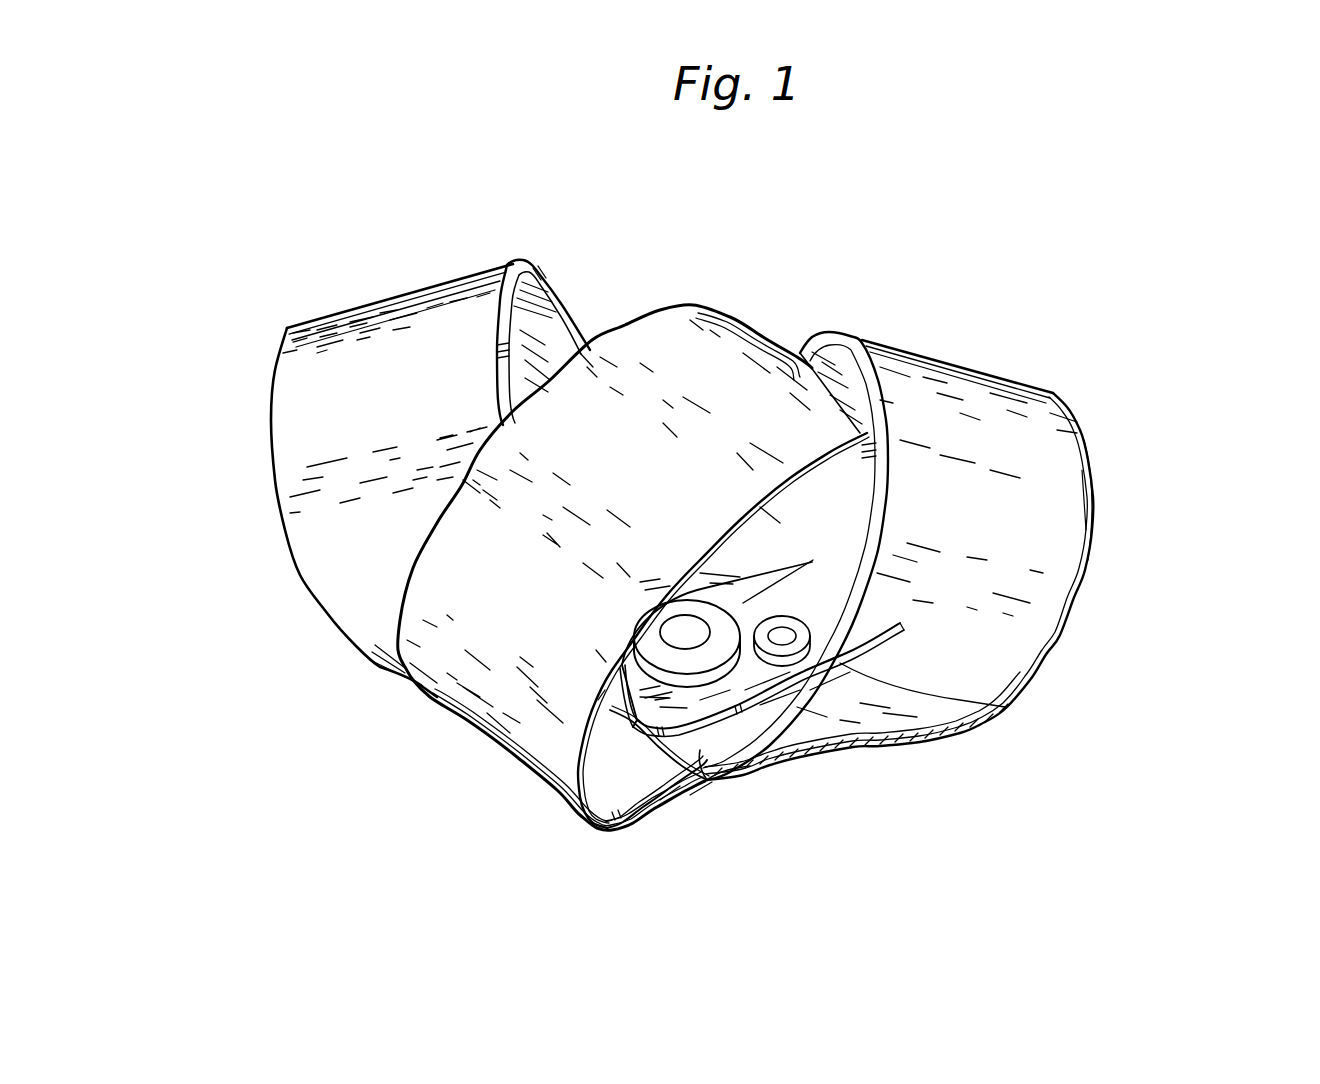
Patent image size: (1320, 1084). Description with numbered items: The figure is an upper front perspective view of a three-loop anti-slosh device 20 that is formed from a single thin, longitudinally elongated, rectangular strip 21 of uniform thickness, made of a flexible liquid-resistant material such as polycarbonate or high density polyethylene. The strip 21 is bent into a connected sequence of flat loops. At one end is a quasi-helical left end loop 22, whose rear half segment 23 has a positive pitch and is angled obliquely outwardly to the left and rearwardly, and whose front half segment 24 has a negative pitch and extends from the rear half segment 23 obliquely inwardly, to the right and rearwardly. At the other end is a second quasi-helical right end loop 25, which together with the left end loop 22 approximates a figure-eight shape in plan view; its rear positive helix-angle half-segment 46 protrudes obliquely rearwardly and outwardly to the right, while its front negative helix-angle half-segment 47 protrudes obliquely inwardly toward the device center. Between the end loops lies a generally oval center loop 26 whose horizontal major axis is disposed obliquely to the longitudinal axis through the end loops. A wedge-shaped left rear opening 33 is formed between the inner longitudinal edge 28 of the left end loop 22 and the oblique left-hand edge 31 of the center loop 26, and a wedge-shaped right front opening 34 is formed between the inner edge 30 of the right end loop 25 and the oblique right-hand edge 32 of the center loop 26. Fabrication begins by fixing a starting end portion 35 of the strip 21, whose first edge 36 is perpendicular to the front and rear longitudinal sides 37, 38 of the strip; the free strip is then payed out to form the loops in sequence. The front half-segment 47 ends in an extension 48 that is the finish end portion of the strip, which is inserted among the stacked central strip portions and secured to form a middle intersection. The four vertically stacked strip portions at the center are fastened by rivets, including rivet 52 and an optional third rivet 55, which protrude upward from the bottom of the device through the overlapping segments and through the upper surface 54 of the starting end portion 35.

The anti-slosh device 20 is at (940, 337).
The strip 21 is at (873, 330).
The left end loop 22 is at (323, 313).
The rear half segment 23 is at (397, 297).
The front half segment 24 is at (297, 413).
The right end loop 25 is at (1070, 502).
The center loop 26 is at (757, 325).
The inner longitudinal edge 28 is at (520, 260).
The inner longitudinal edge 30 is at (840, 647).
The left oblique longitudinal edge 31 is at (650, 313).
The right oblique longitudinal edge 32 is at (682, 578).
The left rear opening 33 is at (584, 283).
The right front opening 34 is at (697, 815).
The starting end portion 35 is at (867, 747).
The first edge 36 is at (725, 790).
The front longitudinal side 37 is at (683, 632).
The rear longitudinal side 38 is at (808, 628).
The rear positive helix-angle half-segment 46 is at (1003, 383).
The front negative helix-angle half-segment 47 is at (1063, 545).
The finish end portion 48 is at (743, 775).
The rivet 52 is at (1013, 700).
The upper surface 54 is at (748, 592).
The third rivet 55 is at (633, 727).